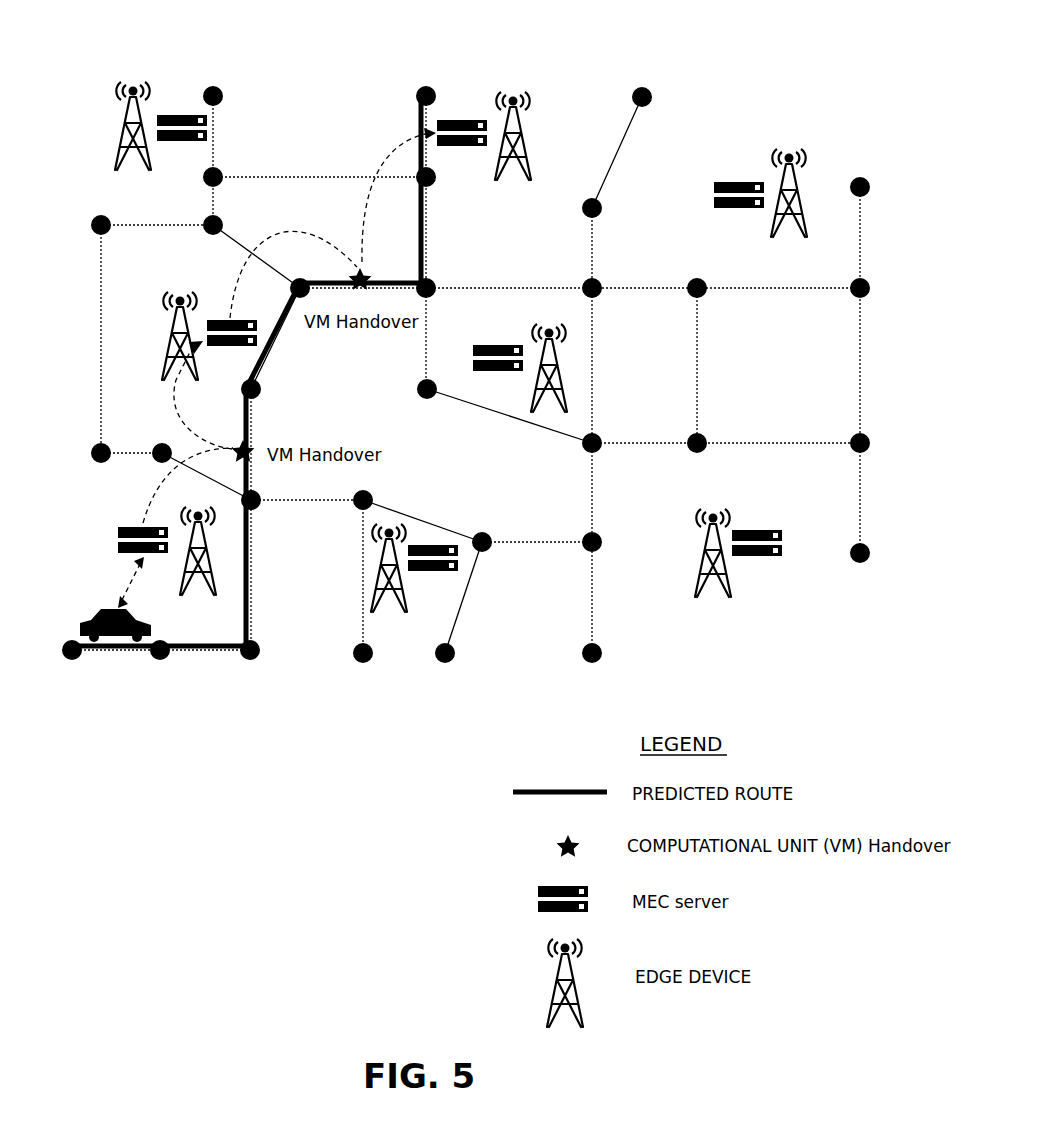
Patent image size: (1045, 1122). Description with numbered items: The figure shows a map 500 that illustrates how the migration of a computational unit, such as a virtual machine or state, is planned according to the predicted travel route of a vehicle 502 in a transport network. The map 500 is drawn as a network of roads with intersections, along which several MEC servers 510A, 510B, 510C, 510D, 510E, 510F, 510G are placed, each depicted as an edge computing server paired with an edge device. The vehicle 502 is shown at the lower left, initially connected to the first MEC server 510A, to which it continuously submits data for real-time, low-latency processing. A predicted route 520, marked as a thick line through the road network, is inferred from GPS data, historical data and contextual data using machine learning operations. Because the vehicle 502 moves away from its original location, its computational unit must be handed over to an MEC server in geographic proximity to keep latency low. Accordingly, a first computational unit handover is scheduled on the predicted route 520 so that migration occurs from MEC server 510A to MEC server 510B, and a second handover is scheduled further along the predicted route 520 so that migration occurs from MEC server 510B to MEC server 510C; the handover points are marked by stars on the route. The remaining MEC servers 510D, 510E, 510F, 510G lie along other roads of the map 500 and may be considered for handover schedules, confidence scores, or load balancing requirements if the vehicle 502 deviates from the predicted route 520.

The map 500 is at (68, 44).
The vehicle 502 is at (98, 645).
The MEC server 510A is at (117, 532).
The MEC server 510B is at (257, 340).
The MEC server 510C is at (464, 120).
The MEC server 510D is at (729, 182).
The MEC server 510E is at (489, 345).
The MEC server 510F is at (764, 562).
The MEC server 510G is at (460, 560).
The predicted route 520 is at (426, 215).